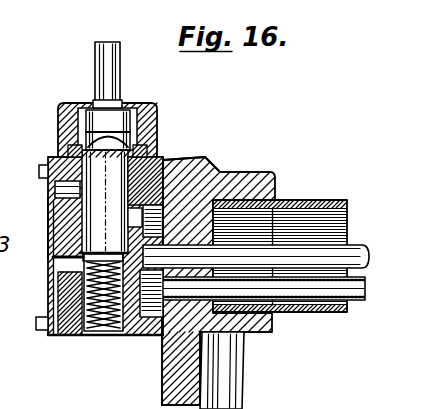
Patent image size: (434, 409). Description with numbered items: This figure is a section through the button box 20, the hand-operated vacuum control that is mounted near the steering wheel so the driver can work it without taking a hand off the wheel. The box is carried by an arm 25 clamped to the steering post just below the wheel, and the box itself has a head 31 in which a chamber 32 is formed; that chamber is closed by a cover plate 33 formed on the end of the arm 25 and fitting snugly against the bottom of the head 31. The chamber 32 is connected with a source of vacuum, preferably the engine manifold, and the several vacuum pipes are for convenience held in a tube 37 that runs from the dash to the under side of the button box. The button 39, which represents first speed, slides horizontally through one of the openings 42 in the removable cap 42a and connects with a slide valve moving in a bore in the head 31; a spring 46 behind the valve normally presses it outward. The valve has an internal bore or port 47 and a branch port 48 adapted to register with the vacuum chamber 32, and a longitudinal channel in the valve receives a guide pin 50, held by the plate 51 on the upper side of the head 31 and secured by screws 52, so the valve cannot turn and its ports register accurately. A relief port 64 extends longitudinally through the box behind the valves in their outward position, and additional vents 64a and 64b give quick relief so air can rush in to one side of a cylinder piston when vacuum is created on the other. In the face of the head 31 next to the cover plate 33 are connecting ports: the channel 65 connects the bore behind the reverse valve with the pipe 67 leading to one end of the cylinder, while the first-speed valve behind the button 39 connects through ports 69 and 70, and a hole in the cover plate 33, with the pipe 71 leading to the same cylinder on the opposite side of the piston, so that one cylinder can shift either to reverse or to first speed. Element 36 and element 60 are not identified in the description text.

The button box 20 is at (48, 92).
The arm 25 is at (244, 371).
The head 31 is at (88, 336).
The chamber 32 is at (183, 170).
The cover plate 33 is at (209, 166).
The seat member 36 is at (136, 200).
The tube 37 is at (302, 200).
The button 39 is at (119, 47).
The openings 42 is at (114, 110).
The removable cap 42a is at (62, 100).
The springs 46 is at (110, 323).
The internal bore or port 47 is at (45, 228).
The branch port 48 is at (146, 198).
The guide pin 50 is at (55, 193).
The plate 51 is at (47, 336).
The screws 52 is at (41, 171).
The packing 60 is at (74, 130).
The relief port 64 is at (53, 257).
The vents 64a is at (58, 279).
The vents 64b is at (52, 336).
The channel or port 65 is at (228, 172).
The pipe 67 is at (356, 251).
The port 69 is at (157, 314).
The port 70 is at (136, 314).
The pipe 71 is at (362, 281).